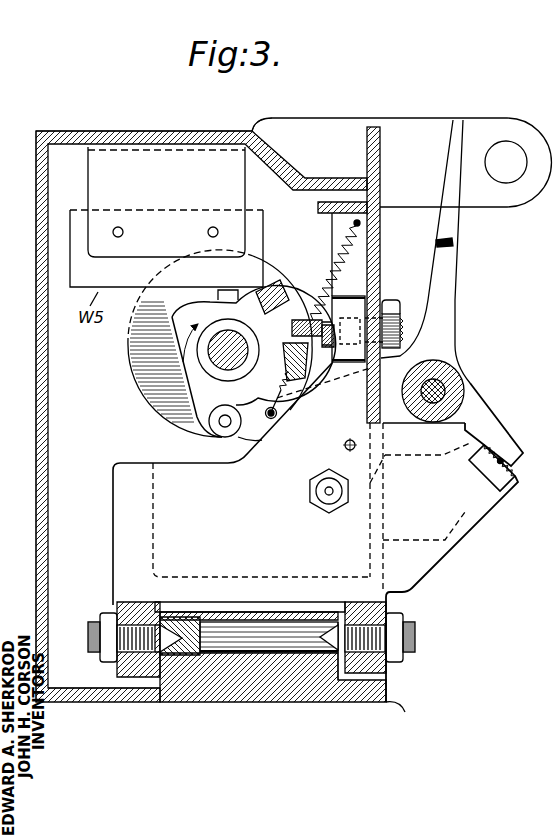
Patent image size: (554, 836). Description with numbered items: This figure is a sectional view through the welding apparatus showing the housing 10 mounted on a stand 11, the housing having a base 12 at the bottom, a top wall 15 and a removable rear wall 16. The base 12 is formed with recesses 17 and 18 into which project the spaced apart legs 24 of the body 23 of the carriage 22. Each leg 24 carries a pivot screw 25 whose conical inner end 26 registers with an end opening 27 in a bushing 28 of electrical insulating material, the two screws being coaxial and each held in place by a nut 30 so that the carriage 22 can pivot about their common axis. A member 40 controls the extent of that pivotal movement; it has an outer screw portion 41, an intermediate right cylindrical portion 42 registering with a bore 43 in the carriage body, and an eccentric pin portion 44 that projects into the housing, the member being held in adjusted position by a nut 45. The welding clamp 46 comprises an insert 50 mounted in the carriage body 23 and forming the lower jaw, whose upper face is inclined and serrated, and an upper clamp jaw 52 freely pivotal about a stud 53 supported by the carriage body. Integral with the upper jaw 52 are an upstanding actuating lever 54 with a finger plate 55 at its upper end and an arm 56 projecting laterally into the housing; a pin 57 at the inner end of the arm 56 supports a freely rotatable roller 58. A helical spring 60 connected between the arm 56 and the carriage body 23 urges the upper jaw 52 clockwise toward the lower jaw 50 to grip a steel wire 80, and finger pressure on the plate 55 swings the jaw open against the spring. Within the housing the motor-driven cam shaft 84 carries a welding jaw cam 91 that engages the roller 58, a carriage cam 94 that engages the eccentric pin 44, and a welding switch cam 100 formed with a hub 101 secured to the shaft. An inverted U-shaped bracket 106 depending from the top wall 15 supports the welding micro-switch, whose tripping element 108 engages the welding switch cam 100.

The housing 10 is at (126, 128).
The stand 11 is at (392, 704).
The base 12 is at (250, 690).
The top wall 15 is at (172, 131).
The removable rear wall 16 is at (34, 353).
The recess 17 is at (370, 683).
The recess 18 is at (90, 686).
The carriage 22 is at (479, 530).
The carriage body 23 is at (381, 233).
The legs 24 is at (140, 678).
The pivot screw 25 is at (137, 605).
The conical inner end 26 is at (172, 612).
The end opening 27 is at (178, 656).
The bushing 28 is at (240, 630).
The nut 30 is at (105, 614).
The member 40 is at (318, 347).
The outer screw portion 41 is at (402, 323).
The intermediate right cylindrical portion 42 is at (333, 362).
The bore 43 is at (353, 296).
The eccentric pin portion 44 is at (303, 320).
The nut 45 is at (390, 304).
The welding clamp 46 is at (463, 353).
The insert 50 is at (490, 470).
The upper clamp jaw 52 is at (497, 432).
The stud 53 is at (456, 392).
The actuating lever 54 is at (450, 270).
The finger plate 55 is at (452, 163).
The arm 56 is at (256, 440).
The pin 57 is at (224, 428).
The roller 58 is at (209, 431).
The helical spring 60 is at (340, 246).
The steel wire 80 is at (506, 452).
The cam shaft 84 is at (210, 345).
The welding jaw cam 91 is at (140, 415).
The carriage cam 94 is at (281, 299).
The welding switch cam 100 is at (178, 347).
The hub 101 is at (215, 368).
The inverted U-shaped bracket 106 is at (99, 181).
The tripping element 108 is at (225, 290).